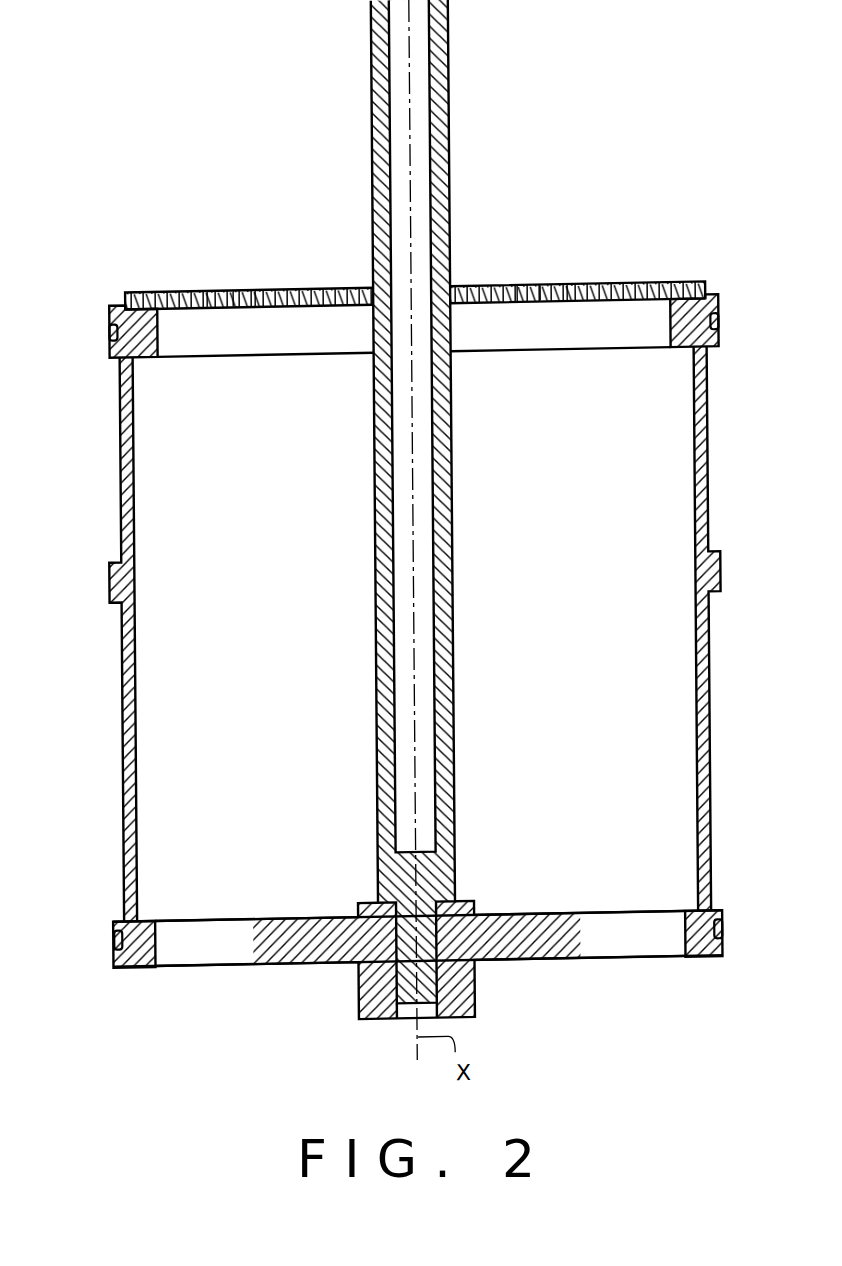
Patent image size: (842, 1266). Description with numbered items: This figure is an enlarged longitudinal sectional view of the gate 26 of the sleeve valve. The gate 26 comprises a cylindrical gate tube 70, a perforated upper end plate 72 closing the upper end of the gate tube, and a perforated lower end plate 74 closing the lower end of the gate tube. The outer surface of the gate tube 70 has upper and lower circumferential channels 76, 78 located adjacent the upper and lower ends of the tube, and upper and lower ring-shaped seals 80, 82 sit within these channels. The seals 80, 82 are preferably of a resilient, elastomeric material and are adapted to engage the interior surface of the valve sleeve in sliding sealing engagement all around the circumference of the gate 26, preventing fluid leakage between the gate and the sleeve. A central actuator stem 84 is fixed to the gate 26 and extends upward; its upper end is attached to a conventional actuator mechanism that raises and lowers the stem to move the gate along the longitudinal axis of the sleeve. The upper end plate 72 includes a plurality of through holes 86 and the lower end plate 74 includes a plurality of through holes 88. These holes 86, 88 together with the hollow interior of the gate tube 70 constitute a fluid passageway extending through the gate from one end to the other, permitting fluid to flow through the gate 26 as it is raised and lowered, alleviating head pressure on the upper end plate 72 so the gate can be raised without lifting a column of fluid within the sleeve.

The gate 26 is at (662, 220).
The gate tube 70 is at (136, 481).
The upper end plate 72 is at (168, 287).
The lower end plate 74 is at (315, 961).
The upper circumferential channel 76 is at (112, 336).
The lower circumferential channel 78 is at (113, 926).
The upper ring-shaped seal 80 is at (112, 327).
The lower ring-shaped seal 82 is at (113, 934).
The central actuator stem 84 is at (376, 96).
The through holes 86 is at (210, 287).
The through holes 88 is at (153, 947).